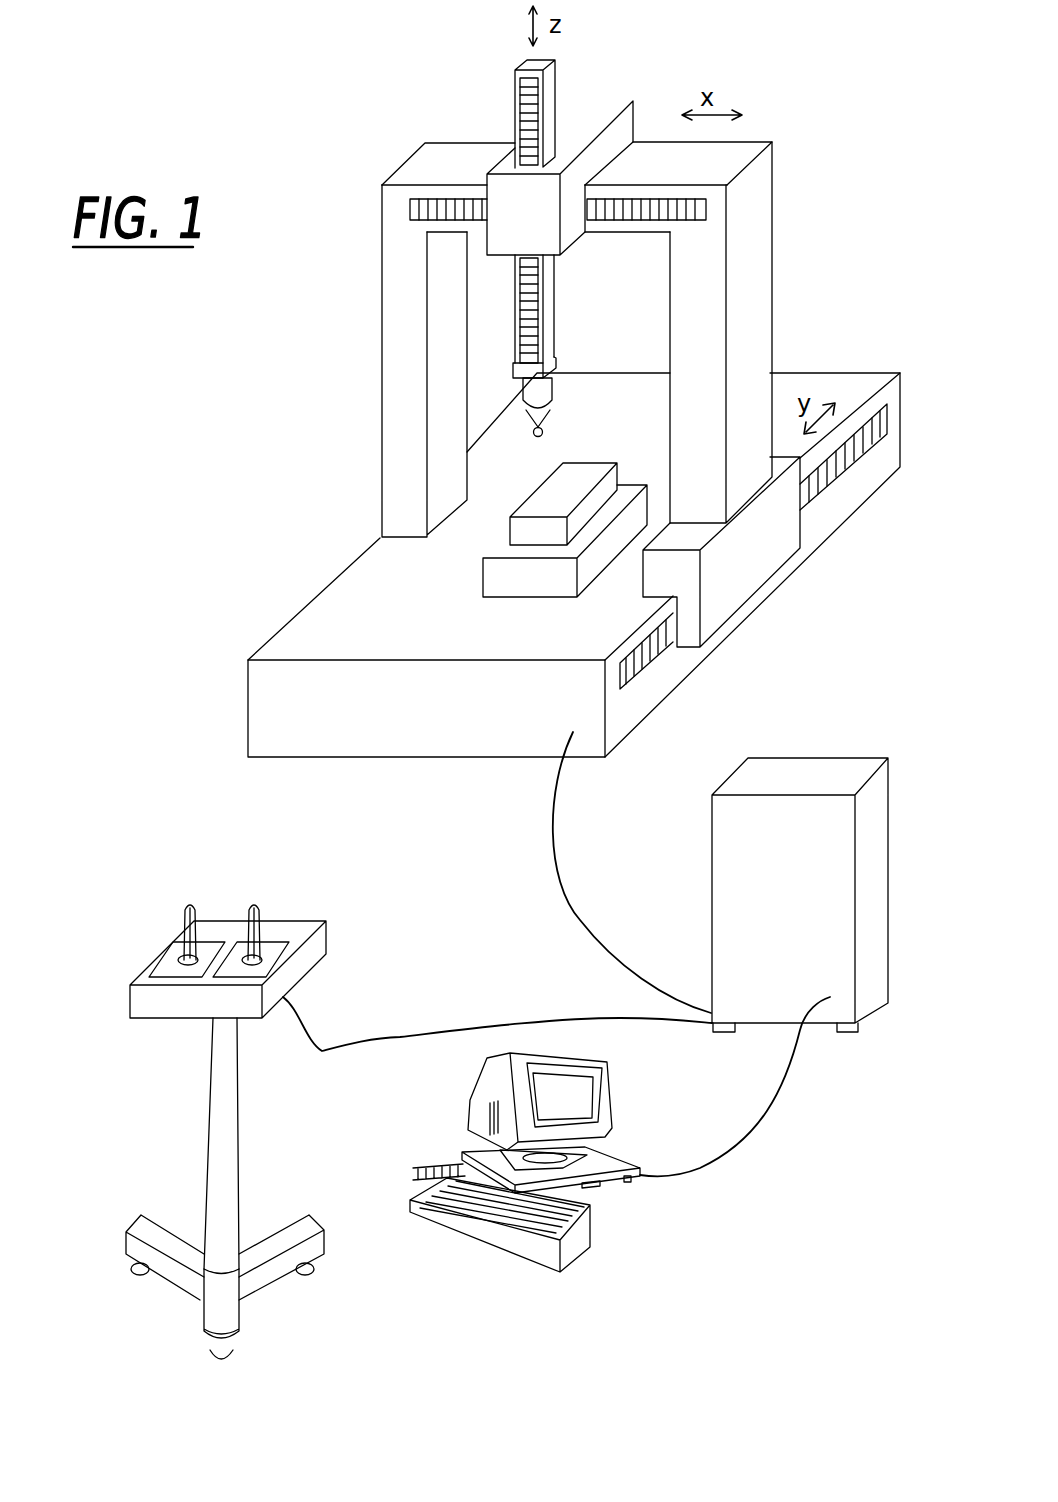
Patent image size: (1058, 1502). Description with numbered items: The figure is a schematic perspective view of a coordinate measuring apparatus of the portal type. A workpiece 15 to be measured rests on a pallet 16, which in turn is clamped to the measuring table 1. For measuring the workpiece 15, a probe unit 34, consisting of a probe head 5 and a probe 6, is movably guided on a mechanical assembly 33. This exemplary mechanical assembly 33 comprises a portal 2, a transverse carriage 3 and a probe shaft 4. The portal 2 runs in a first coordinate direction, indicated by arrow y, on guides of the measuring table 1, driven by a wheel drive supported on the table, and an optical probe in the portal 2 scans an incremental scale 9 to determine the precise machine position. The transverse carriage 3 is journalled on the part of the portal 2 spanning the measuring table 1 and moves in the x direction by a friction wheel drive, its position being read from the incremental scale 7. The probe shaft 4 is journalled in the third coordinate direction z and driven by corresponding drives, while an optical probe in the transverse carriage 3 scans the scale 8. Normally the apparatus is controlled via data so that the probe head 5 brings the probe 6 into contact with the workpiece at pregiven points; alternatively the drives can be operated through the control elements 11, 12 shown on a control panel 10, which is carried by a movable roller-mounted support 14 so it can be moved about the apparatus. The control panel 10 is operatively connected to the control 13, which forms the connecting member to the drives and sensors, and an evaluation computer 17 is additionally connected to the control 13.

The measuring table 1 is at (288, 632).
The portal 2 is at (388, 288).
The transverse carriage 3 is at (503, 163).
The probe shaft 4 is at (521, 62).
The probe head 5 is at (551, 387).
The probe 6 is at (530, 420).
The incremental scale 7 is at (704, 208).
The scale 8 is at (533, 105).
The incremental scale 9 is at (836, 470).
The control panel 10 is at (119, 967).
The control element 11 is at (167, 970).
The control element 12 is at (272, 954).
The control 13 is at (803, 768).
The movable roller-mounted support 14 is at (221, 1187).
The workpiece 15 is at (530, 503).
The pallet 16 is at (485, 570).
The evaluation computer 17 is at (612, 1107).
The mechanical assembly 33 is at (357, 169).
The probe unit 34 is at (575, 397).